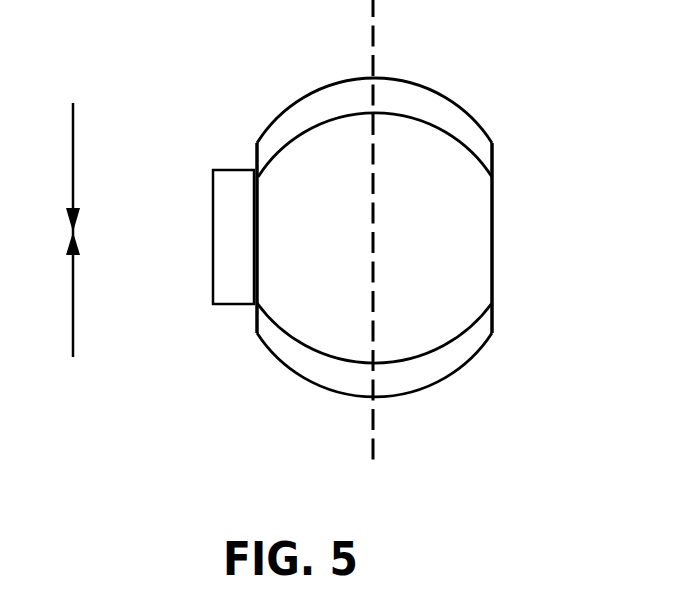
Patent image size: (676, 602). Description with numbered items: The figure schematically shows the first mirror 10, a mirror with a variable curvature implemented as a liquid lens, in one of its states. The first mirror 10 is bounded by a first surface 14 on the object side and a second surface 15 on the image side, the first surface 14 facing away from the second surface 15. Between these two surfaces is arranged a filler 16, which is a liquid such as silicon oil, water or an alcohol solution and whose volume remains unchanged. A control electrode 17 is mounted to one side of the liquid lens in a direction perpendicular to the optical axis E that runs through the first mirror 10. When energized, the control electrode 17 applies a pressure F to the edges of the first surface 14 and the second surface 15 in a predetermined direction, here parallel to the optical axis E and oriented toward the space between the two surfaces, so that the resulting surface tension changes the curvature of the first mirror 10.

The first mirror 10 is at (360, 217).
The first surface 14 is at (335, 98).
The second surface 15 is at (313, 360).
The filler 16 is at (477, 262).
The control electrode 17 is at (228, 238).
The optical axis E is at (389, 230).
The pressure F is at (58, 230).